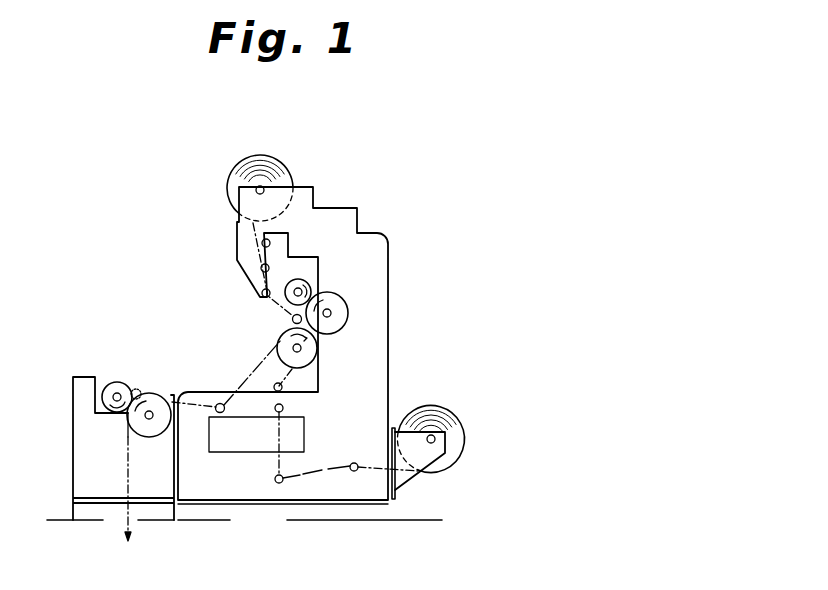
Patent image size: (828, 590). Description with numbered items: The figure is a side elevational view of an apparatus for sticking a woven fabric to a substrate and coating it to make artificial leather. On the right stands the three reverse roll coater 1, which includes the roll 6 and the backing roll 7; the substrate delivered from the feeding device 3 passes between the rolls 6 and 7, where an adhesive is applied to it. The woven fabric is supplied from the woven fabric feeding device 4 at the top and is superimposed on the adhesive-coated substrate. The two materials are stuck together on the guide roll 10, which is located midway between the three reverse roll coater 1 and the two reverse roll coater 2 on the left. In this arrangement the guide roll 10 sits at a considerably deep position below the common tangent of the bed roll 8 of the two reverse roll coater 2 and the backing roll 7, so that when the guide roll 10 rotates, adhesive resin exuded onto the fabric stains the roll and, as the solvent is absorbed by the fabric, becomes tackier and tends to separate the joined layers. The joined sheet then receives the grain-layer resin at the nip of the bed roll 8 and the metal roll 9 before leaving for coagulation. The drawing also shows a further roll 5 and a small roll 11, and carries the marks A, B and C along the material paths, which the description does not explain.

The three reverse roll coater 1 is at (389, 297).
The two reverse roll coater 2 is at (83, 377).
The feeding device 3 is at (457, 413).
The woven fabric feeding device 4 is at (293, 180).
The roller 5 is at (304, 281).
The roll 6 is at (340, 306).
The backing roll 7 is at (278, 343).
The bed roll 8 is at (150, 393).
The metal roll 9 is at (117, 382).
The guide roll 10 is at (218, 403).
The guide roller 11 is at (292, 318).
The sheet path A is at (336, 470).
The sheet path B is at (255, 225).
The sheet path C is at (123, 520).